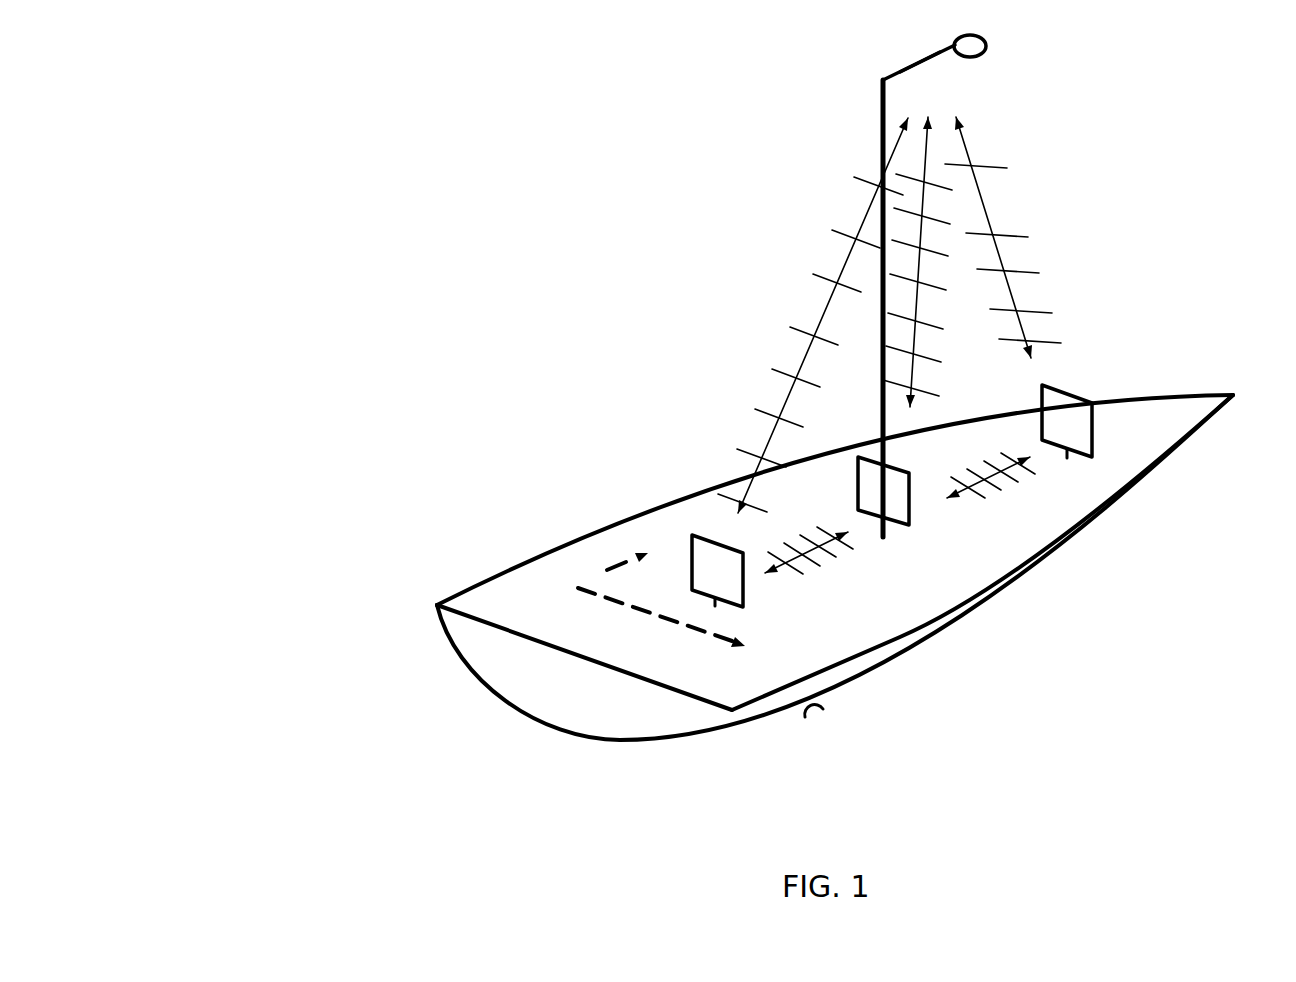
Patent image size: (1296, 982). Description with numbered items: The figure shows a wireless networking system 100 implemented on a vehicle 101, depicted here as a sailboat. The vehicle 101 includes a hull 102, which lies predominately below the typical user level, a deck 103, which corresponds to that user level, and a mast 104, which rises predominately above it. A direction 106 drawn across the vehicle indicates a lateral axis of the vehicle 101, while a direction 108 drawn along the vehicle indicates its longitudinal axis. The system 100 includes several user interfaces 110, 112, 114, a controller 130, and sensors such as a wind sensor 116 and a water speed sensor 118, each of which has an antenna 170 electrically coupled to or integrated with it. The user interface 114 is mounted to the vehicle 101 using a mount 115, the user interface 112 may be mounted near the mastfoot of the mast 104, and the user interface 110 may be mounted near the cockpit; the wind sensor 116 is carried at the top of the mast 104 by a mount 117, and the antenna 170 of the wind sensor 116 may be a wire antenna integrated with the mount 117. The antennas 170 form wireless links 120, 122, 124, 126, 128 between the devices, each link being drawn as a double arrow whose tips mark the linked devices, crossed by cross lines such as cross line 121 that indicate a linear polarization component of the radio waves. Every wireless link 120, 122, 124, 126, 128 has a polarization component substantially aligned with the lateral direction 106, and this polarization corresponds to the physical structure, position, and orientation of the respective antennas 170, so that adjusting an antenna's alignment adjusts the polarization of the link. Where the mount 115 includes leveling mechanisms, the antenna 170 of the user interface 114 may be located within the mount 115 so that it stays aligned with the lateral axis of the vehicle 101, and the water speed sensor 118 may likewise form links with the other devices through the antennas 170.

The wireless networking system 100 is at (361, 119).
The vehicle 101 is at (821, 567).
The hull 102 is at (1048, 563).
The deck 103 is at (1128, 466).
The mast 104 is at (883, 122).
The direction 106 is at (682, 626).
The direction 108 is at (578, 588).
The user interface 110 is at (599, 539).
The user interface 112 is at (908, 518).
The user interface 114 is at (1068, 391).
The mount 115 is at (1068, 452).
The wind sensor 116 is at (987, 46).
The mount 117 is at (932, 56).
The water speed sensor 118 is at (823, 715).
The wireless link 120 is at (811, 250).
The cross line 121 is at (797, 328).
The wireless link 122 is at (951, 355).
The wireless link 124 is at (1032, 197).
The wireless link 126 is at (835, 583).
The wireless link 128 is at (1000, 506).
The controller 130 is at (687, 553).
The antenna 170 is at (867, 403).